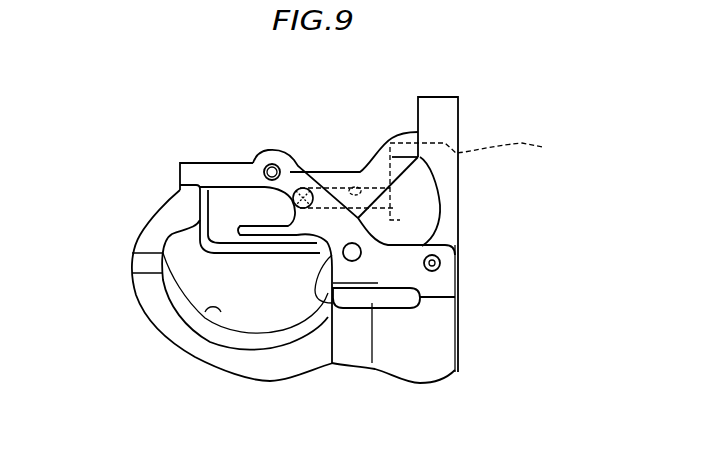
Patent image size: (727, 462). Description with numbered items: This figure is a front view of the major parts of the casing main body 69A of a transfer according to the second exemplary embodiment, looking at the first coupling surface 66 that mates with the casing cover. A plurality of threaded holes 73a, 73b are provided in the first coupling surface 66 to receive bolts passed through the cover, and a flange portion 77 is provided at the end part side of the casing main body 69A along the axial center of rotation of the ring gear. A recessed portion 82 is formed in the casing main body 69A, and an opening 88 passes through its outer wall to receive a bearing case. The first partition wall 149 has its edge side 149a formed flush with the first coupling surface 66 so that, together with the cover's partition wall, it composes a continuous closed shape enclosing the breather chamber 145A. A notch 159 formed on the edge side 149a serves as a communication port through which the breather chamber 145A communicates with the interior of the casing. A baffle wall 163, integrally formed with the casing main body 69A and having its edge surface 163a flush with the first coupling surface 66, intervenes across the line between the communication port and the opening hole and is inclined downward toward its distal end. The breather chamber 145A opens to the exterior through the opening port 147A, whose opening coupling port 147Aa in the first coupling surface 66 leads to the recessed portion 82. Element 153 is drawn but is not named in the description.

The first coupling surface 66 is at (290, 168).
The casing main body 69A is at (207, 158).
The threaded hole 73a is at (445, 262).
The threaded hole 73b is at (366, 250).
The flange portion 77 is at (443, 97).
The recessed portion 82 is at (479, 150).
The opening 88 is at (205, 310).
The breather chamber 145A is at (218, 207).
The opening port 147A is at (362, 172).
The opening coupling port 147Aa is at (319, 178).
The first partition wall 149 is at (246, 255).
The edge side 149a is at (270, 256).
The step portion 153 is at (220, 187).
The notch 159 is at (321, 265).
The baffle wall 163 is at (251, 223).
The edge surface 163a is at (263, 222).